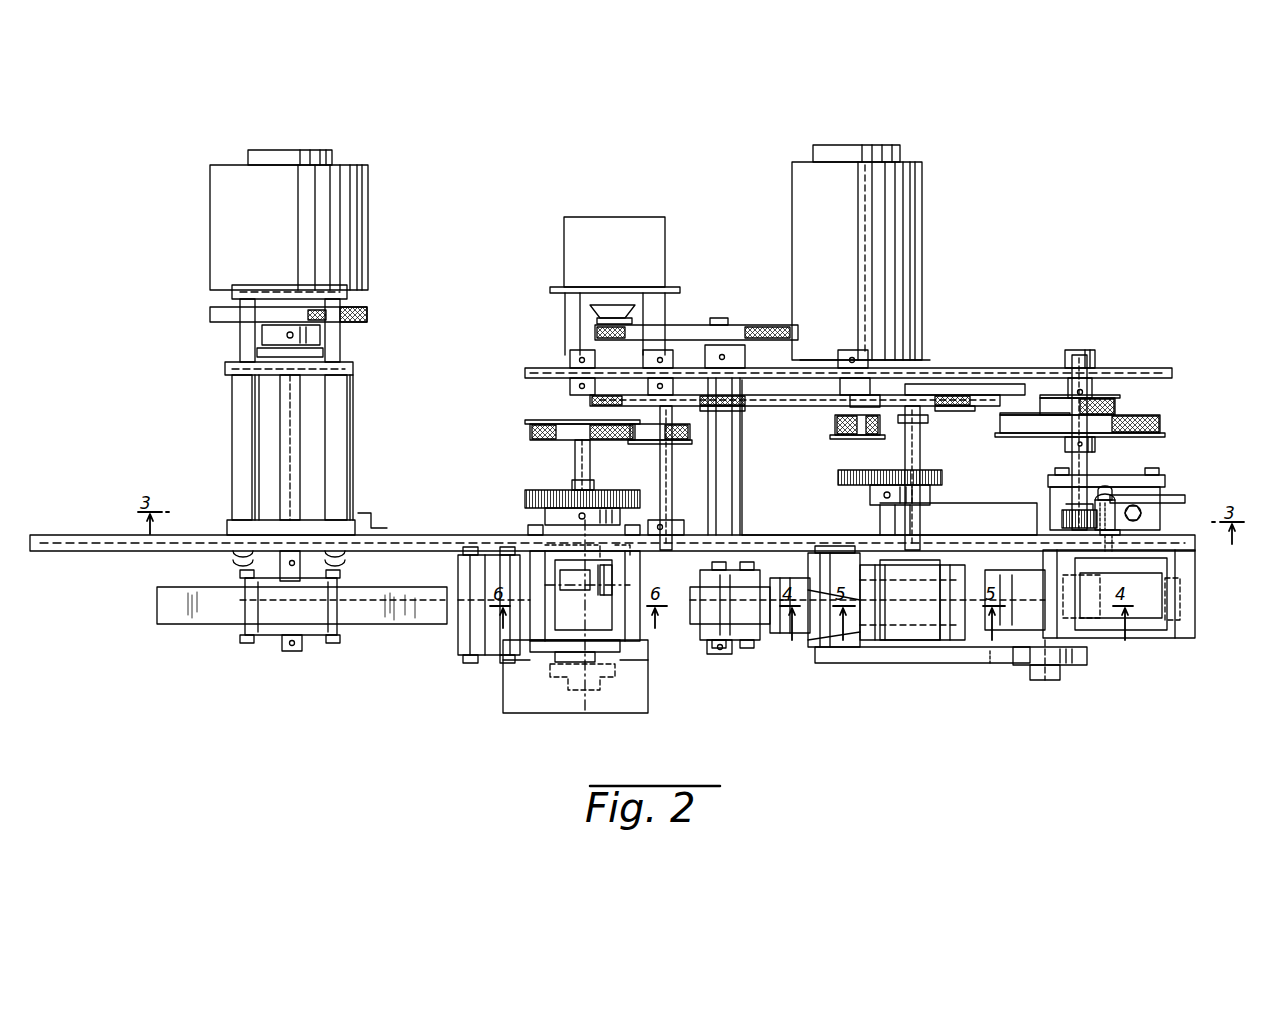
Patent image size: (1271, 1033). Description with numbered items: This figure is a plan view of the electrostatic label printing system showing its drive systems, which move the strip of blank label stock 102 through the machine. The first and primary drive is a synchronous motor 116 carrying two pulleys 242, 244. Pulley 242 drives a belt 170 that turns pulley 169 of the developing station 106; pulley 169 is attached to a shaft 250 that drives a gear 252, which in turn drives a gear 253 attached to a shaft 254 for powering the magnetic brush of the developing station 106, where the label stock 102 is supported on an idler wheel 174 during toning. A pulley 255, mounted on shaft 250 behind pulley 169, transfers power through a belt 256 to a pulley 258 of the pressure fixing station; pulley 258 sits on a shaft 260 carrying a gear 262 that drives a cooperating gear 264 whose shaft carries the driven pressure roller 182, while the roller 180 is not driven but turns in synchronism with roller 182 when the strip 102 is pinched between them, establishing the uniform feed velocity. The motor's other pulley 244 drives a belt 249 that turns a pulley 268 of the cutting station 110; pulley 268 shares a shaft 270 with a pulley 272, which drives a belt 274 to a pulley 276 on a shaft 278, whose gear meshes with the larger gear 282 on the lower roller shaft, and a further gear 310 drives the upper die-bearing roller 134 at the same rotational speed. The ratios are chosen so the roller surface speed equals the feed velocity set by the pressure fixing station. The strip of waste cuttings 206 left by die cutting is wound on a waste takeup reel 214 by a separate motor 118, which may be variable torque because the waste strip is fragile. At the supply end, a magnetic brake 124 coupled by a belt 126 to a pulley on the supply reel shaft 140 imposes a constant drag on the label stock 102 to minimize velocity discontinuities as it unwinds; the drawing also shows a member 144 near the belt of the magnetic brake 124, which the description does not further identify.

The strip of blank label stock 102 is at (783, 618).
The developing station 106 is at (1163, 650).
The cutting station 110 is at (540, 722).
The drive motor 116 is at (912, 204).
The motor 118 is at (365, 182).
The magnetic brake 124 is at (628, 215).
The belt 126 is at (688, 332).
The upper die-bearing roller 134 is at (563, 628).
The shaft 140 is at (715, 648).
The drive bar 144 is at (752, 326).
The pulley 169 is at (1160, 436).
The belt 170 is at (1020, 424).
The idler wheel 174 is at (1010, 623).
The roller 180 is at (928, 632).
The driven pressure roller 182 is at (875, 638).
The strip of waste cuttings 206 is at (405, 617).
The waste takeup reel 214 is at (195, 626).
The pulley 242 is at (843, 432).
The pulley 244 is at (905, 363).
The belt 249 is at (856, 362).
The shaft 250 is at (1088, 465).
The gear 252 is at (1065, 516).
The gear 253 is at (1112, 504).
The shaft 254 is at (1117, 547).
The pulley 255 is at (1100, 401).
The belt 256 is at (985, 403).
The pulley 258 is at (962, 394).
The shaft 260 is at (905, 450).
The gear 262 is at (928, 479).
The gear 264 is at (840, 486).
The pulley 268 is at (735, 415).
The shaft 270 is at (672, 481).
The pulley 272 is at (650, 444).
The belt 274 is at (560, 432).
The pulley 276 is at (560, 425).
The shaft 278 is at (578, 462).
The gear 282 is at (528, 498).
The gear 310 is at (615, 678).